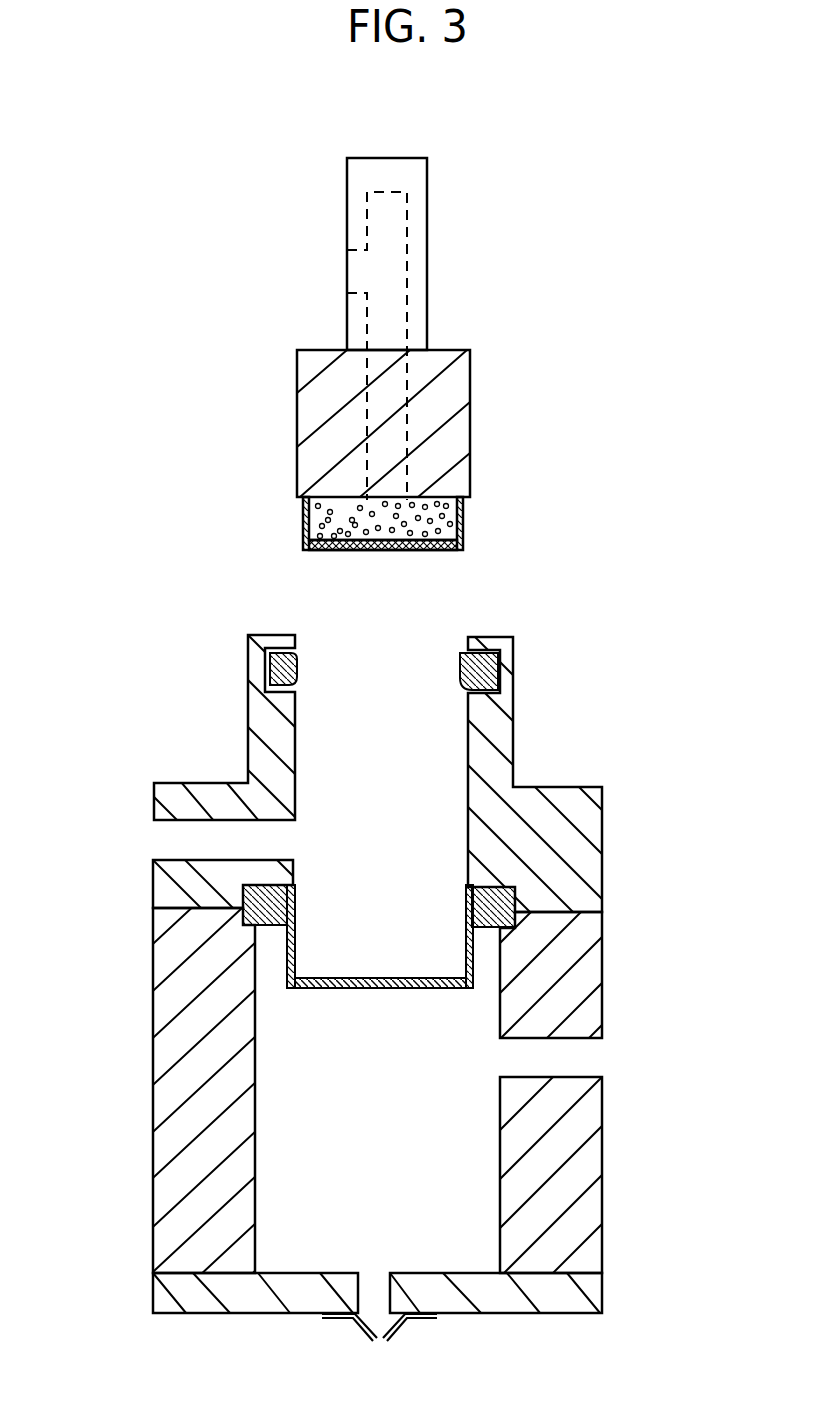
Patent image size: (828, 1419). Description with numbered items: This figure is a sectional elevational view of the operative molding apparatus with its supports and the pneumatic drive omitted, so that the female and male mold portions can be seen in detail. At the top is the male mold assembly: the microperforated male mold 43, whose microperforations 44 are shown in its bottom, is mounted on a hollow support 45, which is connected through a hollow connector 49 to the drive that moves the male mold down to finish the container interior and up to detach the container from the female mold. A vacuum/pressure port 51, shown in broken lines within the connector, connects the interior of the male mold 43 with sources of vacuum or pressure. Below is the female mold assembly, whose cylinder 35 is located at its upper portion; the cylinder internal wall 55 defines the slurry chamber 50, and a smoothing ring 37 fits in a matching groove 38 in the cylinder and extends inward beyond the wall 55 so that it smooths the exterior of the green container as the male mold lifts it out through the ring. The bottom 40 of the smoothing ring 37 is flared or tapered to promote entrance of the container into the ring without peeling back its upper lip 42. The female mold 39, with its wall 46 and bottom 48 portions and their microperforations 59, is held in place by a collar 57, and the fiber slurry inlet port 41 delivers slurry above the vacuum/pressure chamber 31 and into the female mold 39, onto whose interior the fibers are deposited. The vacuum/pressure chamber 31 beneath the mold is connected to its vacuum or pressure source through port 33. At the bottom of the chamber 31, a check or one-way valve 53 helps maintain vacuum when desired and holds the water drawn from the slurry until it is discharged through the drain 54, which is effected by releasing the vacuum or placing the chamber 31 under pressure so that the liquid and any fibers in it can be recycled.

The vacuum/pressure chamber 31 is at (265, 1075).
The port 33 is at (580, 1058).
The cylinder 35 is at (602, 812).
The smoothing ring 37 is at (300, 658).
The groove 38 is at (466, 690).
The female mold 39 is at (286, 955).
The bottom of smoothing ring 40 is at (299, 674).
The fiber slurry inlet port 41 is at (160, 832).
The upper lip 42 is at (294, 897).
The male mold 43 is at (303, 518).
The microperforations 44 is at (366, 534).
The hollow support 45 is at (472, 374).
The wall portion 46 is at (467, 945).
The bottom portion 48 is at (372, 990).
The hollow connector 49 is at (428, 271).
The slurry chamber 50 is at (433, 808).
The vacuum/pressure port 51 is at (348, 270).
The check valve 53 is at (356, 1333).
The drain 54 is at (375, 1286).
The cylinder internal wall 55 is at (468, 752).
The collar 57 is at (241, 885).
The microperforations 59 is at (480, 970).